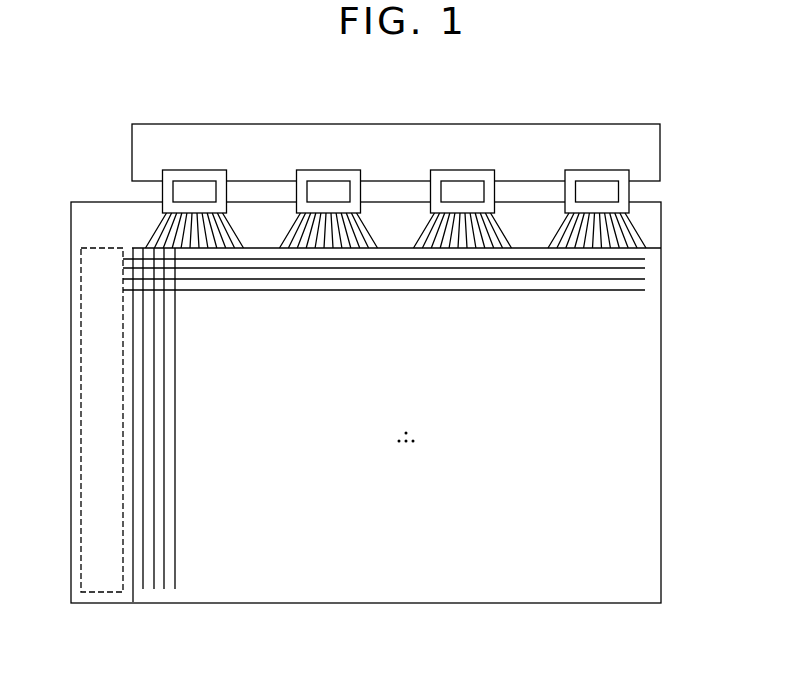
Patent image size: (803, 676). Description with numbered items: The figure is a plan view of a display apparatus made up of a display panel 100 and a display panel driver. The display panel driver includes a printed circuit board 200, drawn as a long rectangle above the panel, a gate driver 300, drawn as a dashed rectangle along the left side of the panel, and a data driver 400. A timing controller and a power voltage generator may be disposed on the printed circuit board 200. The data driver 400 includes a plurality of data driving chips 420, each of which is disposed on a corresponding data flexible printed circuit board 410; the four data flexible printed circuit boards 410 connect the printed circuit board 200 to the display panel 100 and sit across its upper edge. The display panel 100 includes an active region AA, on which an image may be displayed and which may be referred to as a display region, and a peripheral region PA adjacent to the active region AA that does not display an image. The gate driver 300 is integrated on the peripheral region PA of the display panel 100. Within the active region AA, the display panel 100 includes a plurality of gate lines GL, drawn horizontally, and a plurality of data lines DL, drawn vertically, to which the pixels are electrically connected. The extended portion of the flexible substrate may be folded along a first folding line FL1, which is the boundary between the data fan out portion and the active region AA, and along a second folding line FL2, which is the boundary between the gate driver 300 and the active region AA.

The display panel 100 is at (661, 530).
The printed circuit board 200 is at (660, 150).
The gate driver 300 is at (82, 418).
The data driver 400 is at (395, 125).
The data flexible printed circuit board 410 is at (205, 170).
The data driving chip 420 is at (250, 70).
The peripheral region PA is at (650, 217).
The active region AA is at (650, 420).
The first folding line FL1 is at (657, 253).
The second folding line FL2 is at (127, 600).
The gate lines GL is at (280, 292).
The data lines DL is at (177, 418).